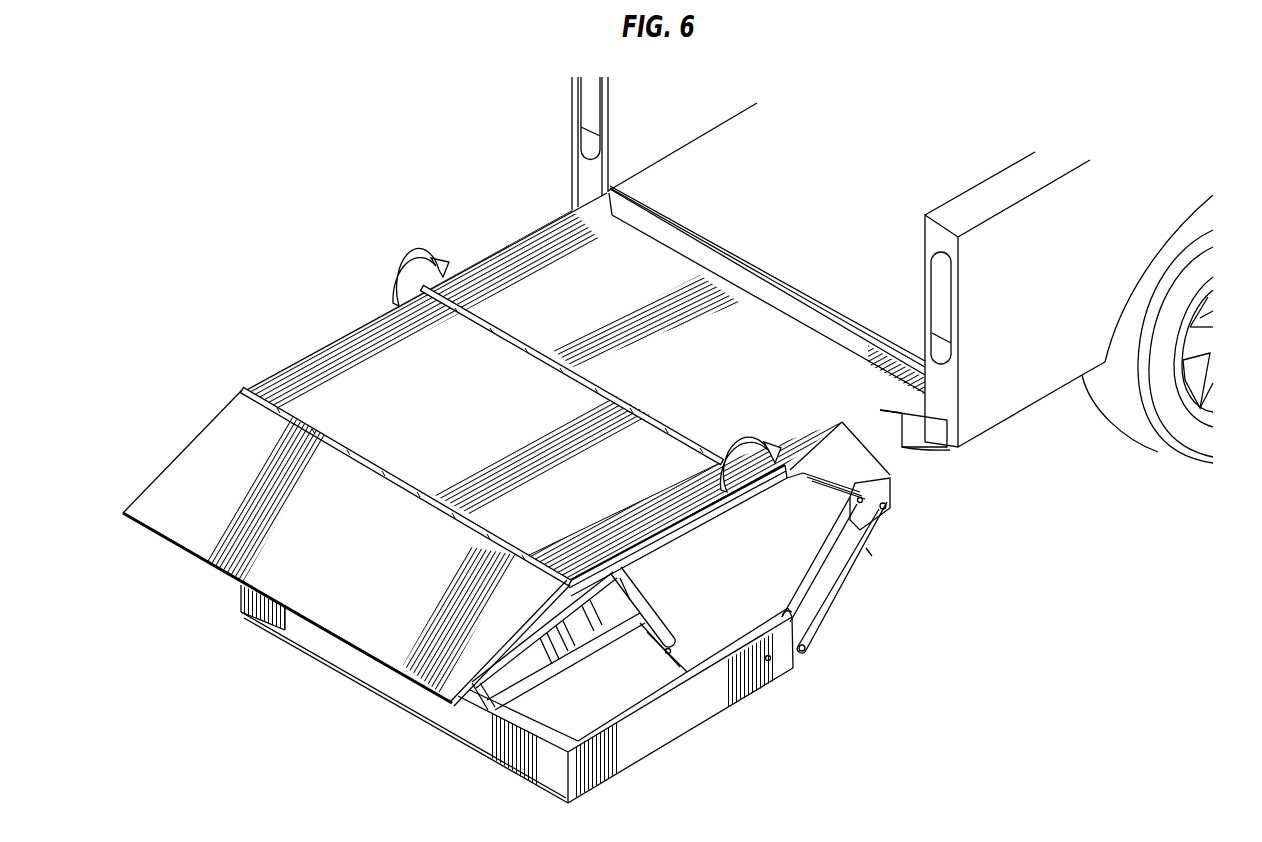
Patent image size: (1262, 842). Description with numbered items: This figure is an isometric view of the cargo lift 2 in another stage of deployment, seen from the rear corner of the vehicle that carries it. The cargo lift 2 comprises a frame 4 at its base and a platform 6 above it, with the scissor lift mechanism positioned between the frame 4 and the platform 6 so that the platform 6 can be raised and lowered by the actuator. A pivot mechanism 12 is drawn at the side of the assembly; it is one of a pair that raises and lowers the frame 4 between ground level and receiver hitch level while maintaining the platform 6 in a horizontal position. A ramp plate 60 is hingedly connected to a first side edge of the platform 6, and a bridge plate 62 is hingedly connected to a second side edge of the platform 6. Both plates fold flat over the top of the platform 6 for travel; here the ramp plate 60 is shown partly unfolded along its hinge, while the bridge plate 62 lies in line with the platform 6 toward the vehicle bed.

The cargo lift 2 is at (330, 316).
The frame 4 is at (684, 667).
The platform 6 is at (513, 451).
The pivot mechanism 12 is at (858, 584).
The ramp plate 60 is at (362, 559).
The bridge plate 62 is at (613, 304).